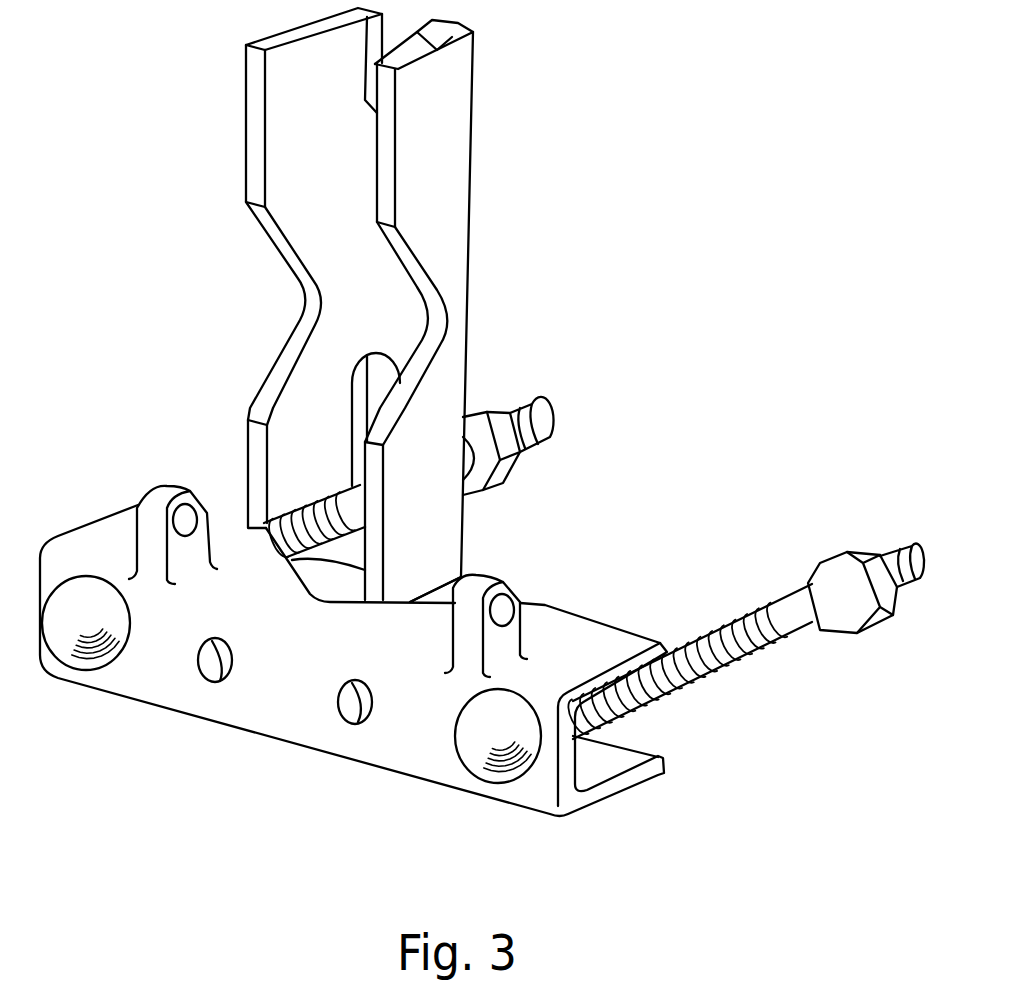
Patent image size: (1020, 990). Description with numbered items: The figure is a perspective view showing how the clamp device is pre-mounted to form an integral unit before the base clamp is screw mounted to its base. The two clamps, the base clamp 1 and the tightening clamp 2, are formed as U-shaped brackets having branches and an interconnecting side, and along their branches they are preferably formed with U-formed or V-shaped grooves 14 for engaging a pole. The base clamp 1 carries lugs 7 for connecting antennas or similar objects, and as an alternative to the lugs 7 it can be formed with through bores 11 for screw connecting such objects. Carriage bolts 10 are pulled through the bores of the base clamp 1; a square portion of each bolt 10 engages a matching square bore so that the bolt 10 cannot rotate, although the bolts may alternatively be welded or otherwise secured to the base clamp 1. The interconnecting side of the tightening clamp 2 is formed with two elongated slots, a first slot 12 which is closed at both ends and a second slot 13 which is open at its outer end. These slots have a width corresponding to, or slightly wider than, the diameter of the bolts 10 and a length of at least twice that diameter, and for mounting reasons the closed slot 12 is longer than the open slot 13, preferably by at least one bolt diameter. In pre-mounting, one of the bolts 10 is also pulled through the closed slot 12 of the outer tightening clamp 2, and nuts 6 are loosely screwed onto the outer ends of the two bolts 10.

The base clamp 1 is at (297, 687).
The tightening clamp 2 is at (447, 215).
The nut 6 is at (549, 398).
The lug 7 is at (520, 632).
The carriage bolt 10 is at (290, 513).
The through bore 11 is at (202, 668).
The first slot 12 is at (382, 377).
The second slot 13 is at (393, 40).
The groove 14 is at (283, 245).